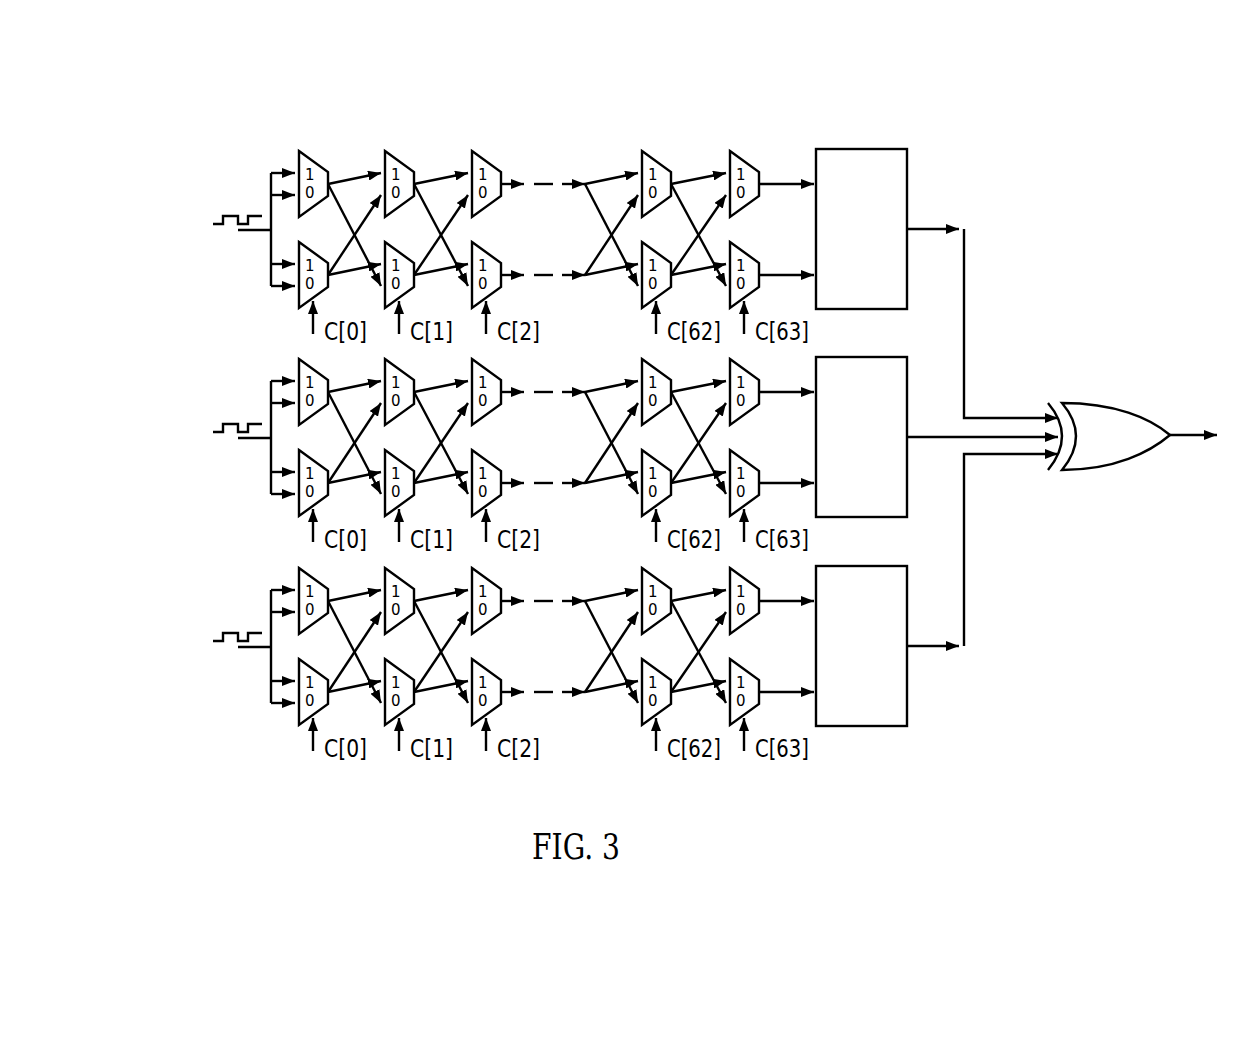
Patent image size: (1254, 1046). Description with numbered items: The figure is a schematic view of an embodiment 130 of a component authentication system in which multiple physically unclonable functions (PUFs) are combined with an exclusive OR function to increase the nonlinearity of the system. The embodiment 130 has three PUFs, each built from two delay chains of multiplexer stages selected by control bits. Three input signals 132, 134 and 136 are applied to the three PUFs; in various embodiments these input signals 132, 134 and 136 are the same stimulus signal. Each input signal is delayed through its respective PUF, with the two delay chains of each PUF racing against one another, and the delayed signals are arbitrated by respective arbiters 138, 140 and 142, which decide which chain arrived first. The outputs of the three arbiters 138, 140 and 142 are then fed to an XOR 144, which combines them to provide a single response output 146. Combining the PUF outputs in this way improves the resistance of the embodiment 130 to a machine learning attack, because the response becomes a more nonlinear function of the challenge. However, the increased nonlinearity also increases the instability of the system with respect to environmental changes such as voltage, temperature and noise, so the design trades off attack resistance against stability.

The embodiment 130 is at (598, 82).
The input signal 132 is at (268, 232).
The input signal 134 is at (268, 440).
The input signal 136 is at (266, 649).
The arbiter 138 is at (847, 176).
The arbiter 140 is at (847, 384).
The arbiter 142 is at (847, 593).
The XOR 144 is at (1095, 447).
The response output 146 is at (1174, 440).